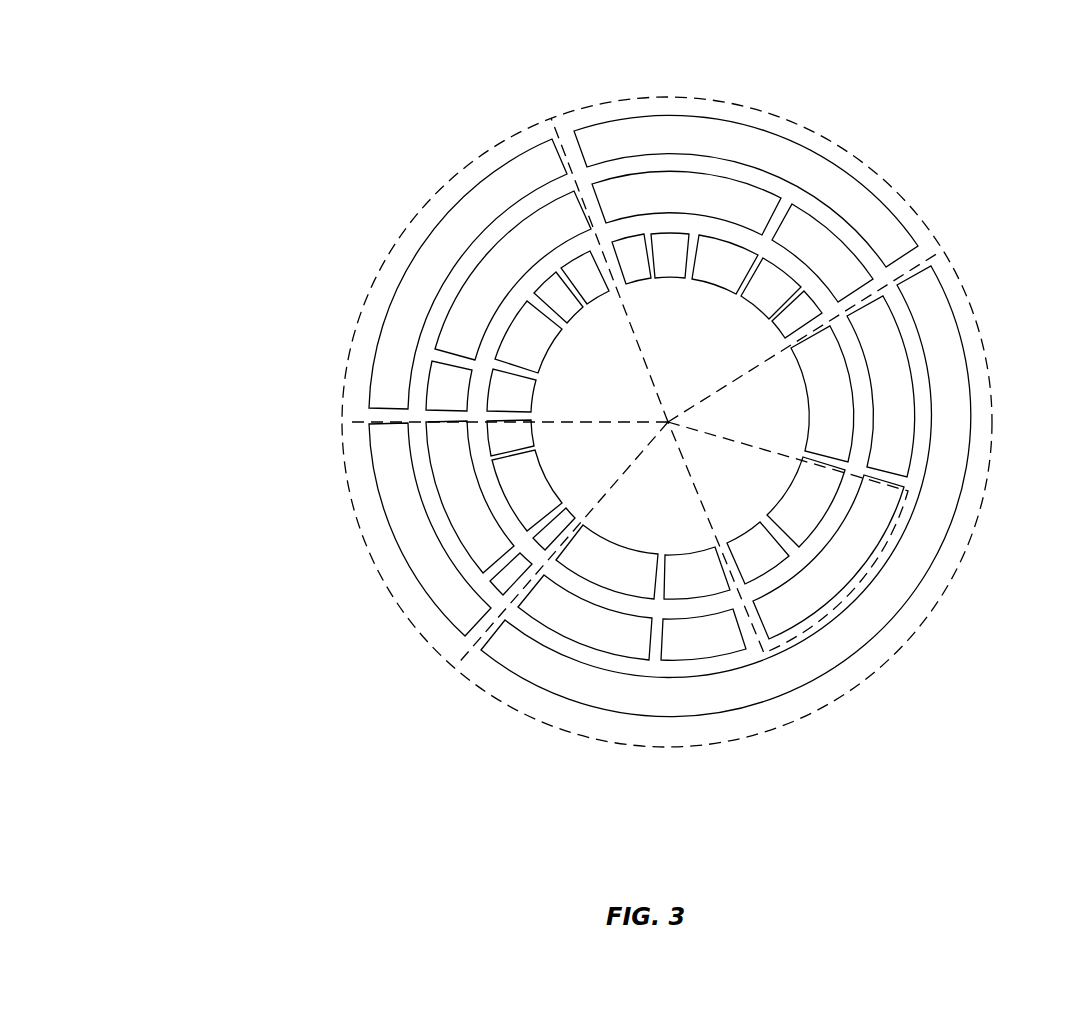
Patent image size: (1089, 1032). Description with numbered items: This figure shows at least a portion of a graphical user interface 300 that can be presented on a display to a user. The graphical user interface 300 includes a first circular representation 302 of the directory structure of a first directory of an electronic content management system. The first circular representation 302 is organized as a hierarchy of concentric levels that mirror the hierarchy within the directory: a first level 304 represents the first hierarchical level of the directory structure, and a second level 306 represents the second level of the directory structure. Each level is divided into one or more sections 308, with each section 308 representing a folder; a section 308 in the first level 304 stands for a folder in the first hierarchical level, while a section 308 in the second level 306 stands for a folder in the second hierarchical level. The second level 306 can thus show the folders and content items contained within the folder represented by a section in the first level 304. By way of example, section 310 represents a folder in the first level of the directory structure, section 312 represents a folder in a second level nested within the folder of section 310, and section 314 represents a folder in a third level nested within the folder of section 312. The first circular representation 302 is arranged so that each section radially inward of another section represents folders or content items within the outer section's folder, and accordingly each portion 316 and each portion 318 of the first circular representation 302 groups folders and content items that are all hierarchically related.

The graphical user interface 300 is at (294, 114).
The first circular representation 302 is at (380, 309).
The first level 304 is at (397, 367).
The second level 306 is at (528, 243).
The section 308 is at (450, 492).
The section 310 is at (940, 467).
The section 312 is at (867, 515).
The section 314 is at (762, 563).
The portion 316 is at (985, 354).
The portion 318 is at (853, 590).